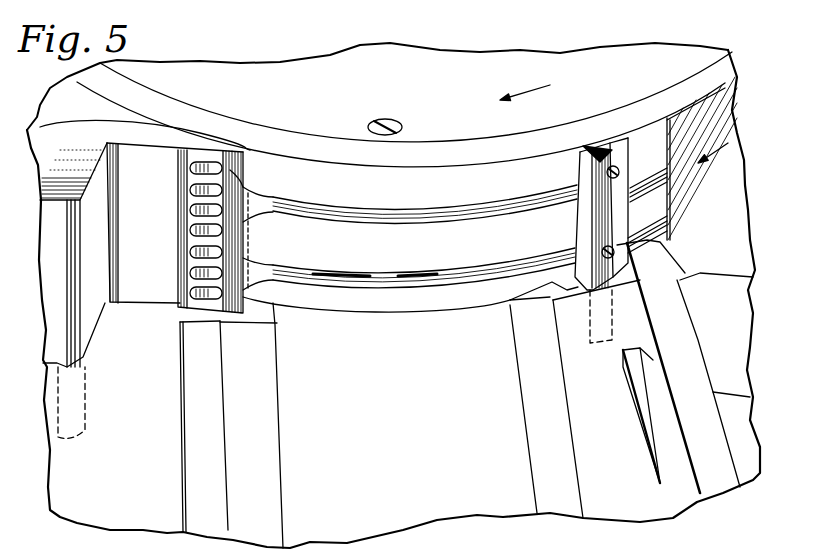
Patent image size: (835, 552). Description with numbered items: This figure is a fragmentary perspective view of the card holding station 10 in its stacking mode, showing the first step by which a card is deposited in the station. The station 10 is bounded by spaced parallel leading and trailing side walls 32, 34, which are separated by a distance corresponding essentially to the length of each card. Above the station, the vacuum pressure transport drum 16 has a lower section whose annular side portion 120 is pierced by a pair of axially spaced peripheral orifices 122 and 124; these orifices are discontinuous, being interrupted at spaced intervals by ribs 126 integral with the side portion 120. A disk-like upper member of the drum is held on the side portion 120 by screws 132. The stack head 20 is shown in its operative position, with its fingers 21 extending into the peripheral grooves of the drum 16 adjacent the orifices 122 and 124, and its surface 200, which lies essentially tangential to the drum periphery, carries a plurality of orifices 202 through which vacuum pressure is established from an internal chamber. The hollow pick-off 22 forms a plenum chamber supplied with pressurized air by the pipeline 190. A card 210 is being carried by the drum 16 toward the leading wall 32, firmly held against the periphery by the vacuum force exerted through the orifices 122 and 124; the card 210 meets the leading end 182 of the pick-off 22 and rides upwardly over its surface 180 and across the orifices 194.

The card holding station 10 is at (429, 477).
The vacuum pressure transport drum 16 is at (480, 72).
The stack head 20 is at (145, 143).
The fingers 21 is at (273, 196).
The pick-off 22 is at (615, 155).
The leading side wall 32 is at (690, 368).
The trailing side wall 34 is at (193, 457).
The side portion 120 is at (360, 238).
The peripheral orifice 122 is at (417, 212).
The peripheral orifice 124 is at (447, 272).
The ribs 126 is at (387, 277).
The screws 132 is at (388, 121).
The surface 180 is at (610, 215).
The leading end 182 is at (607, 217).
The pipeline 190 is at (610, 322).
The orifices 194 is at (617, 170).
The surface 200 is at (183, 244).
The orifices 202 is at (188, 188).
The card 210 is at (728, 110).